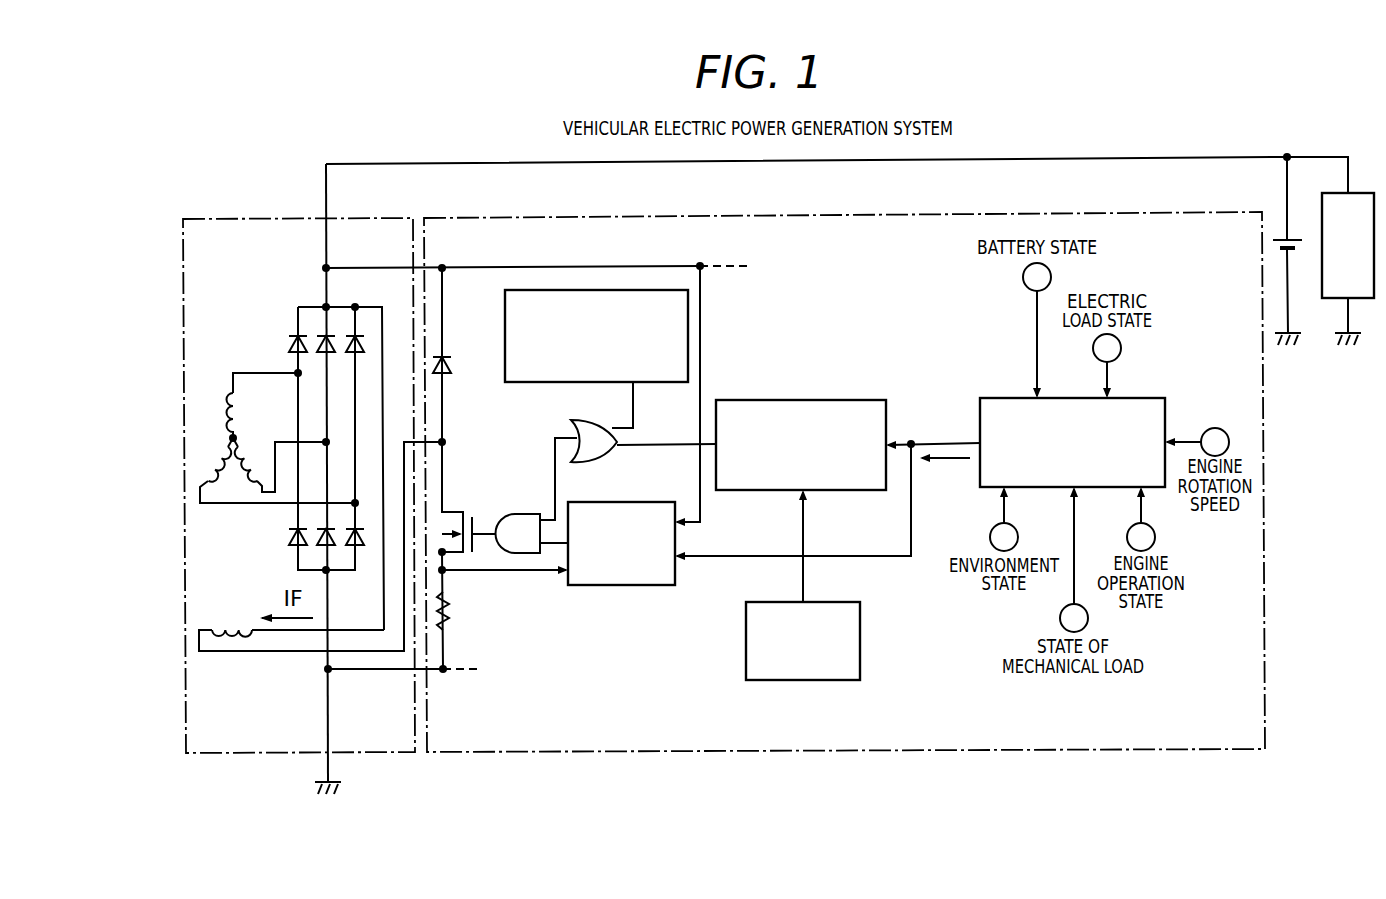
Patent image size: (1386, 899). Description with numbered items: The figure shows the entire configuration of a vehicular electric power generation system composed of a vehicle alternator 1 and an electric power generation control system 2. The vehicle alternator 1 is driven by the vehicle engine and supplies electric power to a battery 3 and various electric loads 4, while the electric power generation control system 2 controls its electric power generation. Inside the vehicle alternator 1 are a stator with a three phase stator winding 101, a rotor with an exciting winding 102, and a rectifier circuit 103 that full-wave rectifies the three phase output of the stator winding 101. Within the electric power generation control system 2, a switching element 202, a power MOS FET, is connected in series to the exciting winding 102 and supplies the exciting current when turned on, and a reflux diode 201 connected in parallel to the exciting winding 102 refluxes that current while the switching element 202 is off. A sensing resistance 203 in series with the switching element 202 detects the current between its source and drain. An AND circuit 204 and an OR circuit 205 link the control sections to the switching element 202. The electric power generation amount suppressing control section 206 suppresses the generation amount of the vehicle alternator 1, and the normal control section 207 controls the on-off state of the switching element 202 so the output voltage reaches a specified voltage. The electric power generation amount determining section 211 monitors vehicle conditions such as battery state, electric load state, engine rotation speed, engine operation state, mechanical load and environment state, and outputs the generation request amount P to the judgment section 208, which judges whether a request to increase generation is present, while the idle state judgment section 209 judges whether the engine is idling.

The vehicle alternator 1 is at (222, 218).
The electric power generation control system 2 is at (508, 218).
The battery 3 is at (1284, 238).
The electric loads 4 is at (1361, 192).
The three phase stator winding 101 is at (230, 434).
The exciting winding 102 is at (238, 622).
The rectifier circuit 103 is at (299, 307).
The reflux diode 201 is at (449, 366).
The switching element 202 is at (456, 511).
The sensing resistance 203 is at (452, 612).
The AND circuit 204 is at (526, 512).
The OR circuit 205 is at (578, 429).
The electric power generation amount suppressing control section 206 is at (656, 384).
The normal control section 207 is at (640, 501).
The judgment section 208 is at (829, 398).
The idle state judgment section 209 is at (829, 601).
The electric power generation amount determining section 211 is at (1139, 397).